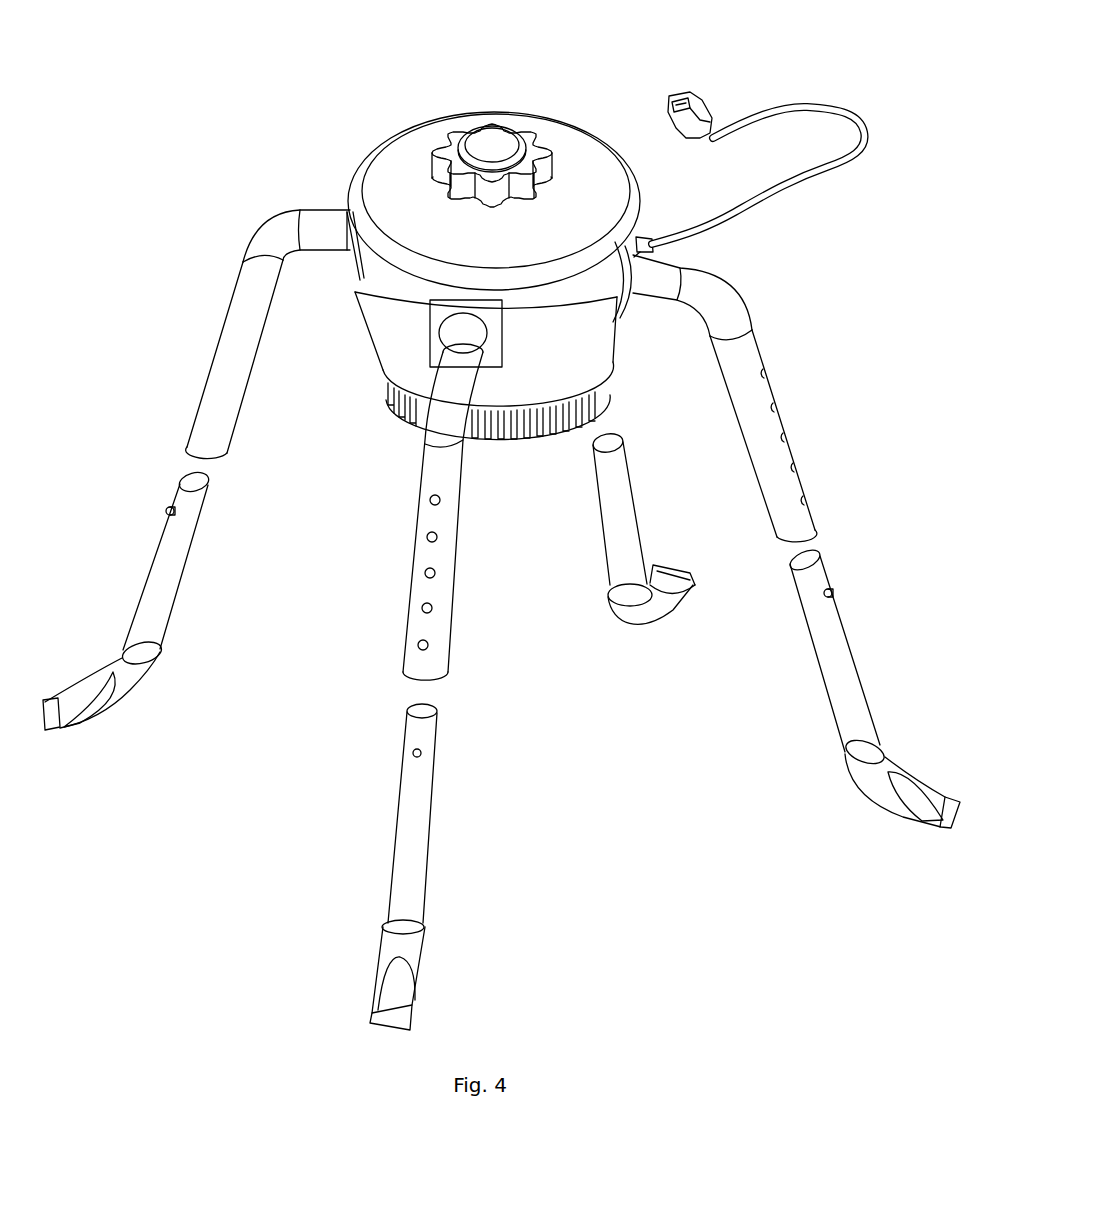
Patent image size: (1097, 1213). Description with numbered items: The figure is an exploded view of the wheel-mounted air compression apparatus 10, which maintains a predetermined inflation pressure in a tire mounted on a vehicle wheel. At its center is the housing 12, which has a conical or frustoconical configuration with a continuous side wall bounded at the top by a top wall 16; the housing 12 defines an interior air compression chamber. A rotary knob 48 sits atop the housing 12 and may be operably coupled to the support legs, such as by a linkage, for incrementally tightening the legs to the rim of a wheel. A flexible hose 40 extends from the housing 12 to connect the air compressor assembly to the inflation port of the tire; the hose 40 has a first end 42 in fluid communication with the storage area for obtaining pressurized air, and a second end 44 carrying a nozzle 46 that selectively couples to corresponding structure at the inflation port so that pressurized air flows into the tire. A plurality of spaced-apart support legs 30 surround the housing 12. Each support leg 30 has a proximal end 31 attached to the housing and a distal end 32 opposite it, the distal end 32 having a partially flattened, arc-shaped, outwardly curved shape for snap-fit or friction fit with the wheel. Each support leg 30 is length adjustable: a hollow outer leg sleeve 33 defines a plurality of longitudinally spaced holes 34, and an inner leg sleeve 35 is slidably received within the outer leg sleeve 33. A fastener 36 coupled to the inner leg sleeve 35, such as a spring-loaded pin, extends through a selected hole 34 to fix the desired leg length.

The wheel-mounted air compression apparatus 10 is at (274, 66).
The housing 12 is at (355, 444).
The top wall 16 is at (390, 163).
The rotary knob 48 is at (528, 140).
The second end 44 is at (652, 236).
The flexible hose 40 is at (838, 113).
The first end 42 is at (706, 143).
The nozzle 46 is at (698, 110).
The support leg 30 is at (316, 727).
The proximal end 31 is at (325, 242).
The outer leg sleeve 33 is at (228, 398).
The holes 34 is at (422, 578).
The inner leg sleeve 35 is at (168, 589).
The fastener 36 is at (166, 512).
The distal end 32 is at (418, 1003).